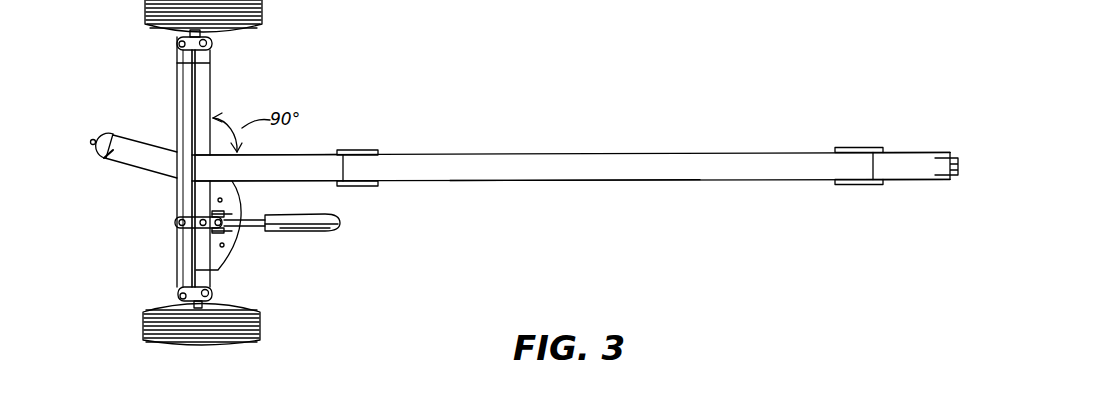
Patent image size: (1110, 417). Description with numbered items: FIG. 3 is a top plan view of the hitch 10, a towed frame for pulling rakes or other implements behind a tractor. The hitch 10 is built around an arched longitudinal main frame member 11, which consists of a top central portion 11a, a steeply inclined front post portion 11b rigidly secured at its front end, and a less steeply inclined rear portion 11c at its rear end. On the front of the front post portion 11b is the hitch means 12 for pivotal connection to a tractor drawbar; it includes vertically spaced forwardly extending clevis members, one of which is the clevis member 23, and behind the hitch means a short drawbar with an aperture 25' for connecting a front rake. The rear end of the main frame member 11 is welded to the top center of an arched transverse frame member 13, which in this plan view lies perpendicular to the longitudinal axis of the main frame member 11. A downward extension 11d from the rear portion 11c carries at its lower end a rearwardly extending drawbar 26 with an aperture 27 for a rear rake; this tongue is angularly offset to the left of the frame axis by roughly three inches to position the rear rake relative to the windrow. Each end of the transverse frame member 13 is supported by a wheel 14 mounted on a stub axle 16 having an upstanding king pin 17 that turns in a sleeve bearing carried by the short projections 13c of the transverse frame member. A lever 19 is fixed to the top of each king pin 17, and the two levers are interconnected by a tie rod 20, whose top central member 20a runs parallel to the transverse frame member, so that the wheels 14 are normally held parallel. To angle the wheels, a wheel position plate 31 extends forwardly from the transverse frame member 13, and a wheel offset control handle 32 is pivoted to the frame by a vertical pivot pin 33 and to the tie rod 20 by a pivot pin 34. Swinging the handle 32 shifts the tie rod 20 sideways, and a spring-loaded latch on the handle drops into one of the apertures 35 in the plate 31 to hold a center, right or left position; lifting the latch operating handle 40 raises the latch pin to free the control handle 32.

The hitch 10 is at (592, 129).
The longitudinal main frame member 11 is at (447, 155).
The top central portion 11a is at (505, 172).
The front post portion 11b is at (898, 160).
The rear portion 11c is at (290, 167).
The downward extension 11d is at (150, 160).
The hitch means 12 is at (960, 147).
The transverse frame member 13 is at (205, 95).
The short projections 13c is at (210, 55).
The wheel 14 is at (262, 12).
The stub axle 16 is at (213, 38).
The king pin 17 is at (210, 47).
The lever 19 is at (178, 42).
The tie rod 20 is at (177, 78).
The top central member 20a is at (177, 113).
The clevis member 23 is at (976, 9).
The aperture 25' is at (895, 12).
The drawbar 26 is at (92, 152).
The aperture 27 is at (92, 132).
The wheel position plate 31 is at (232, 213).
The wheel offset control handle 32 is at (340, 228).
The pivot pin 33 is at (200, 225).
The pivot pin 34 is at (178, 223).
The apertures 35 is at (222, 200).
The latch operating handle 40 is at (335, 218).